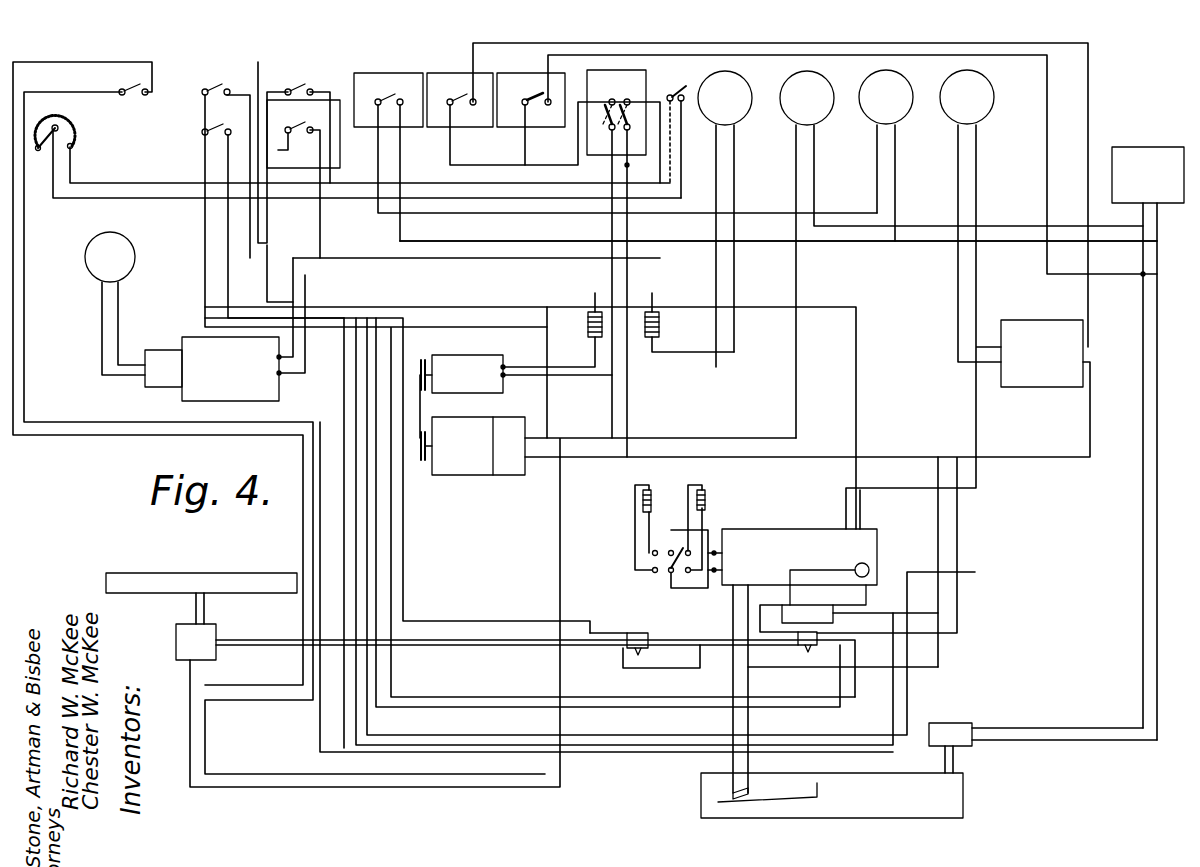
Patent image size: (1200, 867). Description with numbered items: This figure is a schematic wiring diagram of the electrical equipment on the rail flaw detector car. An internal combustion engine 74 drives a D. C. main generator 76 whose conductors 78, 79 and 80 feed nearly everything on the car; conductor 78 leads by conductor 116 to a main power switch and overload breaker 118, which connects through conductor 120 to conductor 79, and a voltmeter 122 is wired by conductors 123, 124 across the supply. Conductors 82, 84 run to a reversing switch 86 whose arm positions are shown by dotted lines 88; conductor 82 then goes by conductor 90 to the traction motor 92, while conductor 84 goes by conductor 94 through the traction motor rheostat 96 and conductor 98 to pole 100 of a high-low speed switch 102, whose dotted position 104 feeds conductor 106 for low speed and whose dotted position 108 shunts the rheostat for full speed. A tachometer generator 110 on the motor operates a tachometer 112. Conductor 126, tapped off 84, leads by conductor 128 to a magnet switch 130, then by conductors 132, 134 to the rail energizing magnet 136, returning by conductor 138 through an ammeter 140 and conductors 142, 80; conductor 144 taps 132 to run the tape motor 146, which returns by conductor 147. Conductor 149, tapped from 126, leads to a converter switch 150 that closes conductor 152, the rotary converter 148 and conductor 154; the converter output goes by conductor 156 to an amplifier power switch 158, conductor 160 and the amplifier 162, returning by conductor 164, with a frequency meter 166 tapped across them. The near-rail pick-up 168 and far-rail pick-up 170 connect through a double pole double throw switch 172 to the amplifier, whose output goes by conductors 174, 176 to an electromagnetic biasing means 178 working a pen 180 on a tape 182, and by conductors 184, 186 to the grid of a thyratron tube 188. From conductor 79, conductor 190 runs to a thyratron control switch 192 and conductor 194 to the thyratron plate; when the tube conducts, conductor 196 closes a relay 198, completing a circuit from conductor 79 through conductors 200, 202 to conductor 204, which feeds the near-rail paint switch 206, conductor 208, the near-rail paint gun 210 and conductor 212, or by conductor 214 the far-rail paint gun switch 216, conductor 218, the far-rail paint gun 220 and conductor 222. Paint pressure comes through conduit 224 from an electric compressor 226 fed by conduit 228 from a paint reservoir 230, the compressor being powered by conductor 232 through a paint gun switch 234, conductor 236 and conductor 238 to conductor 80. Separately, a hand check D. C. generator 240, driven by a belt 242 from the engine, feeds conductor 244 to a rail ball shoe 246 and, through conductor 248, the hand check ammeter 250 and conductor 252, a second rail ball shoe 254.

The internal combustion engine 74 is at (443, 475).
The D. C. main generator 76 is at (503, 475).
The conductor 78 is at (531, 425).
The conductor 79 is at (595, 447).
The conductor 80 is at (547, 475).
The conductor 82 is at (612, 397).
The conductor 84 is at (627, 397).
The reversing switch 86 is at (627, 158).
The dotted lines 88 is at (611, 125).
The conductor 90 is at (585, 145).
The traction motor 92 is at (197, 401).
The conductor 94 is at (672, 186).
The traction motor rheostat 96 is at (82, 118).
The conductor 98 is at (681, 167).
The pole of high-low speed switch 100 is at (681, 118).
The high-low speed switch 102 is at (735, 80).
The dotted line 104 is at (678, 140).
The conductor 106 is at (673, 220).
The dotted position 108 is at (678, 182).
The tachometer generator 110 is at (160, 387).
The tachometer 112 is at (95, 278).
The conductor 116 is at (547, 425).
The main power switch and overload breaker 118 is at (408, 118).
The conductor 120 is at (402, 161).
The voltmeter 122 is at (903, 115).
The conductor 123 is at (877, 177).
The conductor 124 is at (895, 177).
The conductor 126 is at (560, 165).
The conductor 128 is at (525, 152).
The magnet switch 130 is at (548, 92).
The conductor 132 is at (786, 55).
The conductor 134 is at (1162, 226).
The rail energizing magnet 136 is at (1144, 147).
The conductor 138 is at (1008, 226).
The ammeter 140 is at (820, 115).
The conductor 142 is at (796, 386).
The conductor 144 is at (1157, 400).
The tape motor 146 is at (972, 746).
The conductor 147 is at (1143, 504).
The rotary converter 148 is at (1017, 386).
The conductor 149 is at (456, 165).
The converter switch 150 is at (462, 118).
The conductor 152 is at (1088, 43).
The conductor 154 is at (1090, 400).
The conductor 156 is at (378, 138).
The amplifier power switch 158 is at (338, 74).
The conductor 160 is at (856, 365).
The amplifier 162 is at (782, 529).
The conductor 164 is at (984, 345).
The frequency meter 166 is at (985, 118).
The near-rail pick-up 168 is at (958, 270).
The far-rail pick-up 170 is at (976, 270).
The double pole double throw switch 172 is at (665, 573).
The conductor 174 is at (733, 609).
The conductor 176 is at (760, 623).
The electromagnetic biasing means 178 is at (720, 790).
The pen 180 is at (785, 797).
The tape 182 is at (701, 811).
The conductor 184 is at (811, 570).
The conductor 186 is at (850, 564).
The thyratron tube 188 is at (868, 565).
The conductor 190 is at (326, 178).
The thyratron control switch 192 is at (284, 137).
The conductor 194 is at (378, 160).
The conductor 196 is at (866, 595).
The relay 198 is at (805, 604).
The line 200 is at (945, 610).
The conductor 202 is at (957, 633).
The conductor 204 is at (205, 92).
The near-rail paint switch 206 is at (202, 90).
The conductor 208 is at (258, 62).
The near-rail paint gun 210 is at (798, 640).
The conductor 212 is at (940, 640).
The conductor 214 is at (205, 244).
The far-rail paint gun switch 216 is at (198, 140).
The conductor 218 is at (228, 252).
The far-rail paint gun 220 is at (648, 645).
The conductor 222 is at (638, 668).
The conduit 224 is at (268, 637).
The electric compressor 226 is at (216, 660).
The conduit 228 is at (204, 604).
The paint reservoir 230 is at (234, 573).
The conductor 232 is at (24, 240).
The paint gun switch 234 is at (137, 96).
The conductor 236 is at (78, 60).
The conductor 238 is at (292, 787).
The hand check D. C. generator 240 is at (458, 355).
The belt 242 is at (425, 403).
The conductor 244 is at (507, 385).
The rail ball shoe 246 is at (580, 318).
The conductor 248 is at (522, 366).
The hand check ammeter 250 is at (742, 120).
The conductor 252 is at (734, 177).
The second rail ball shoe 254 is at (660, 321).